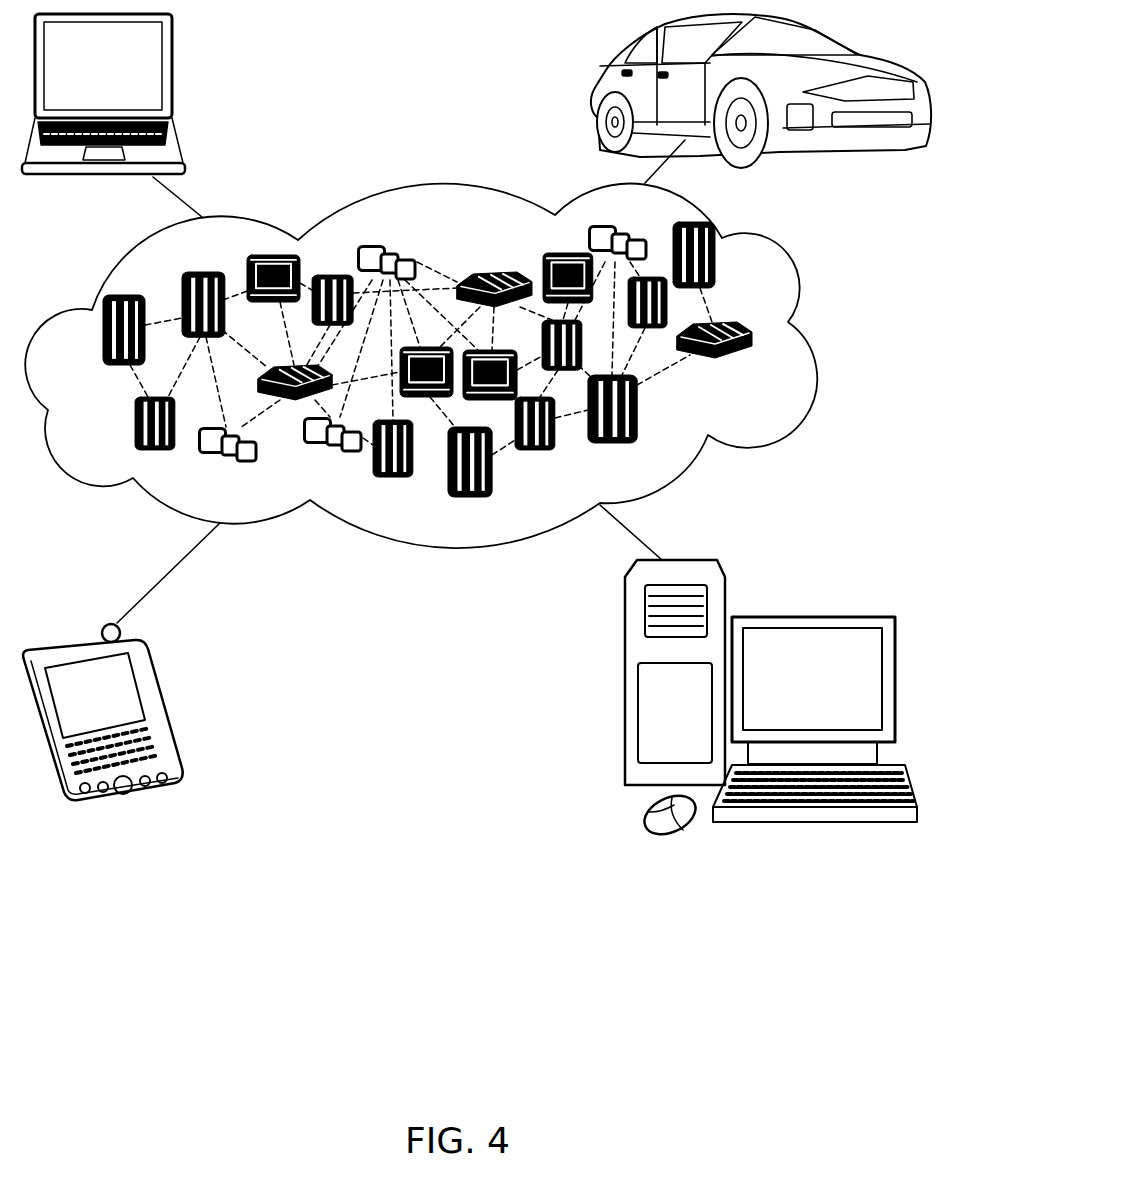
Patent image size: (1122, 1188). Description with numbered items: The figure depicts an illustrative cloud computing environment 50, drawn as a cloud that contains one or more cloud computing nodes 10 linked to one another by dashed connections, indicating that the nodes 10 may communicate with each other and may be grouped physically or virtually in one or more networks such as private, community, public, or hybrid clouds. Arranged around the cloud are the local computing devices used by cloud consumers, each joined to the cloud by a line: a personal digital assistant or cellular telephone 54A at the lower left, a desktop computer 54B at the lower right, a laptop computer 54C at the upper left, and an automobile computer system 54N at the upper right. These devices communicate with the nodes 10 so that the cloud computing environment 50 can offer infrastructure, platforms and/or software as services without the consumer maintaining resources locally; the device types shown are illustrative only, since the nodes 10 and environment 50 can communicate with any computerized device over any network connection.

The cloud computing node 10 is at (753, 367).
The cloud computing environment 50 is at (445, 366).
The personal digital assistant or cellular telephone 54A is at (165, 712).
The desktop computer 54B is at (807, 617).
The laptop computer 54C is at (174, 73).
The automobile computer system 54N is at (598, 90).